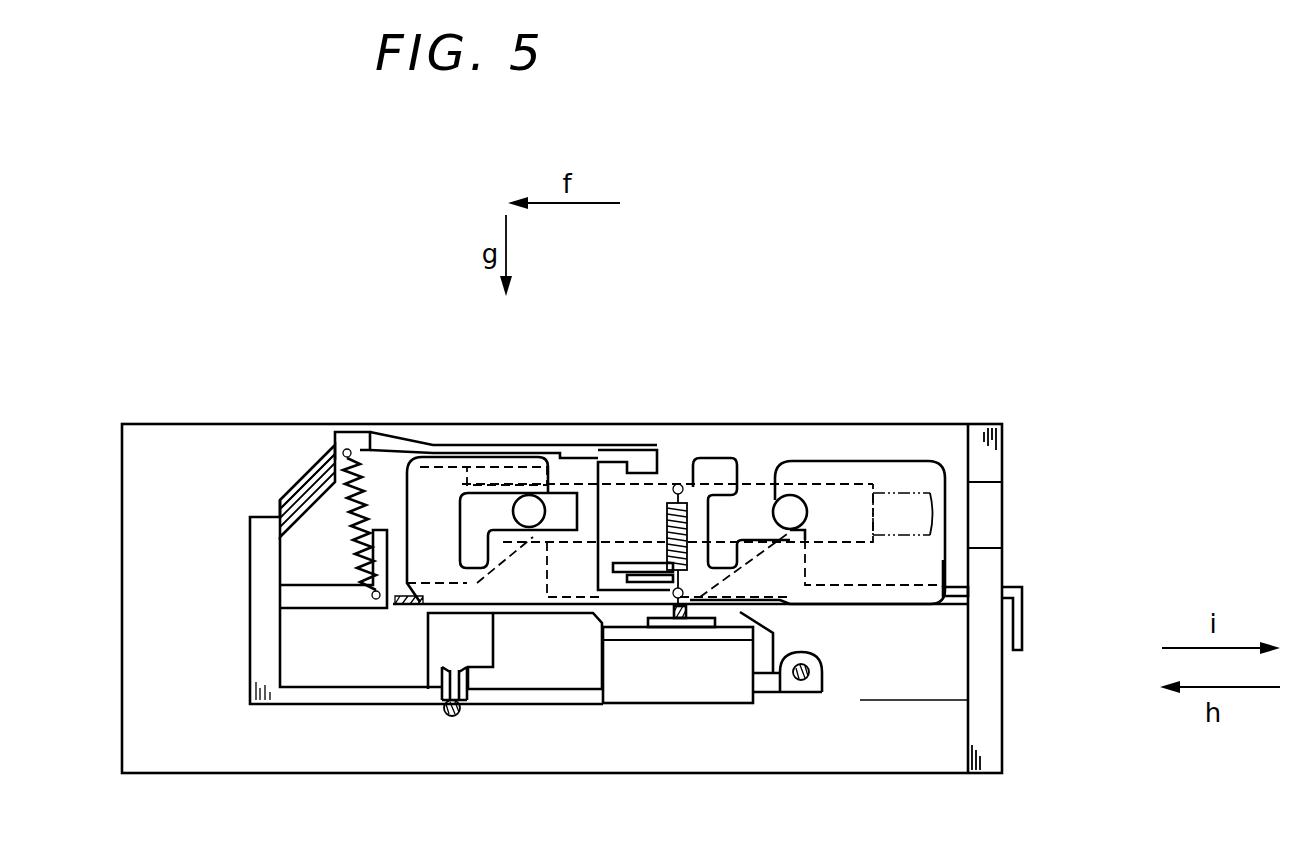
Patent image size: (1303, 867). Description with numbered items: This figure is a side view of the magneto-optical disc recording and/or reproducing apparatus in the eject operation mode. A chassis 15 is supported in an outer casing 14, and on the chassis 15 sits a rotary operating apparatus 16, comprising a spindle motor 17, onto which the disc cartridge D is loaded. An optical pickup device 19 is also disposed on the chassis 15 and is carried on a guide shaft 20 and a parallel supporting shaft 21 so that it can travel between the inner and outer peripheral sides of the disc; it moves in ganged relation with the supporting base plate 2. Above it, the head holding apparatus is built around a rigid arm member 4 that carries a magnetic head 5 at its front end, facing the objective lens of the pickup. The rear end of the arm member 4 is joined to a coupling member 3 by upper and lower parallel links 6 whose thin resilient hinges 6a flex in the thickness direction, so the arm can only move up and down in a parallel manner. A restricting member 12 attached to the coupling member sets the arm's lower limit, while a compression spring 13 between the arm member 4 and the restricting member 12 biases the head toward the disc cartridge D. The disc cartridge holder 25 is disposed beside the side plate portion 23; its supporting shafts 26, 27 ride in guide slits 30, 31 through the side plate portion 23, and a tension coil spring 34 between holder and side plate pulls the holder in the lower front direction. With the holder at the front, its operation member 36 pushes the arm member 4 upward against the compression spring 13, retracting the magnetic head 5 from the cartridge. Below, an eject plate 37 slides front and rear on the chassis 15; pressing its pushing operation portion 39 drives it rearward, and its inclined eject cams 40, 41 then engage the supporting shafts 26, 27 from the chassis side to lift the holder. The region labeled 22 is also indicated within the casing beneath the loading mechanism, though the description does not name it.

The supporting base plate 2 is at (372, 706).
The coupling member 3 is at (262, 607).
The arm member 4 is at (483, 447).
The magnetic head 5 is at (630, 456).
The parallel links 6 is at (318, 478).
The resilient hinges 6a is at (327, 467).
The restricting member 12 is at (334, 600).
The compression spring 13 is at (350, 516).
The outer casing 14 is at (122, 498).
The chassis 15 is at (917, 606).
The rotary operating apparatus 16 is at (670, 735).
The spindle motor 17 is at (708, 692).
The optical pickup device 19 is at (568, 690).
The guide shaft 20 is at (803, 682).
The supporting shaft 21 is at (460, 718).
The chamber 22 is at (882, 698).
The side plate portion 23 is at (895, 478).
The disc cartridge holder 25 is at (867, 513).
The supporting shaft 26 is at (795, 510).
The supporting shaft 27 is at (528, 505).
The guide slit 30 is at (712, 518).
The guide slit 31 is at (433, 483).
The tension coil spring 34 is at (670, 522).
The operation member 36 is at (460, 467).
The eject plate 37 is at (960, 587).
The pushing operation portion 39 is at (1022, 620).
The eject cam 40 is at (745, 627).
The eject cam 41 is at (525, 578).
The disc cartridge D is at (913, 537).